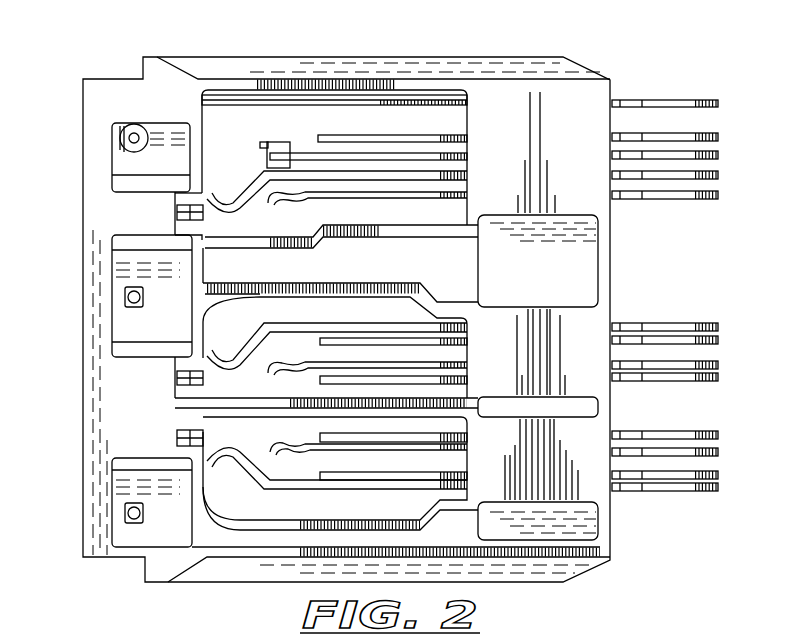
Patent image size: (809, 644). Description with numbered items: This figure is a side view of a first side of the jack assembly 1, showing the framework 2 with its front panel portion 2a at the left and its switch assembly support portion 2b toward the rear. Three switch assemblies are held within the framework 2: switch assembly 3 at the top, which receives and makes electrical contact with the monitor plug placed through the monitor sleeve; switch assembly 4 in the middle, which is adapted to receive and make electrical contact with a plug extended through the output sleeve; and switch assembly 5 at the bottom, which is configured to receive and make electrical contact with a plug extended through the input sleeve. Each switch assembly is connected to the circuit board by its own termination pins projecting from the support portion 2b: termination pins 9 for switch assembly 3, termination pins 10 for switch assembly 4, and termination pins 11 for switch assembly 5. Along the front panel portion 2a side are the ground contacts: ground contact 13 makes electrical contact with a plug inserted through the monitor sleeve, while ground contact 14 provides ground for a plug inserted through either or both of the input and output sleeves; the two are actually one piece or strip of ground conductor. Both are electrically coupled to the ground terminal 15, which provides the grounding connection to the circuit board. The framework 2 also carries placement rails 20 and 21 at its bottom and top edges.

The jack assembly 1 is at (44, 95).
The framework 2 is at (488, 97).
The front panel portion 2a is at (118, 385).
The switch assembly support portion 2b is at (590, 137).
The switch assembly 3 is at (470, 137).
The switch assembly 4 is at (470, 328).
The switch assembly 5 is at (470, 435).
The termination pins 9 is at (720, 137).
The termination pins 10 is at (720, 327).
The termination pins 11 is at (720, 435).
The ground contact 13 is at (177, 213).
The ground contact 14 is at (177, 437).
The ground terminal 15 is at (242, 102).
The placement rail 20 is at (543, 570).
The placement rail 21 is at (522, 62).